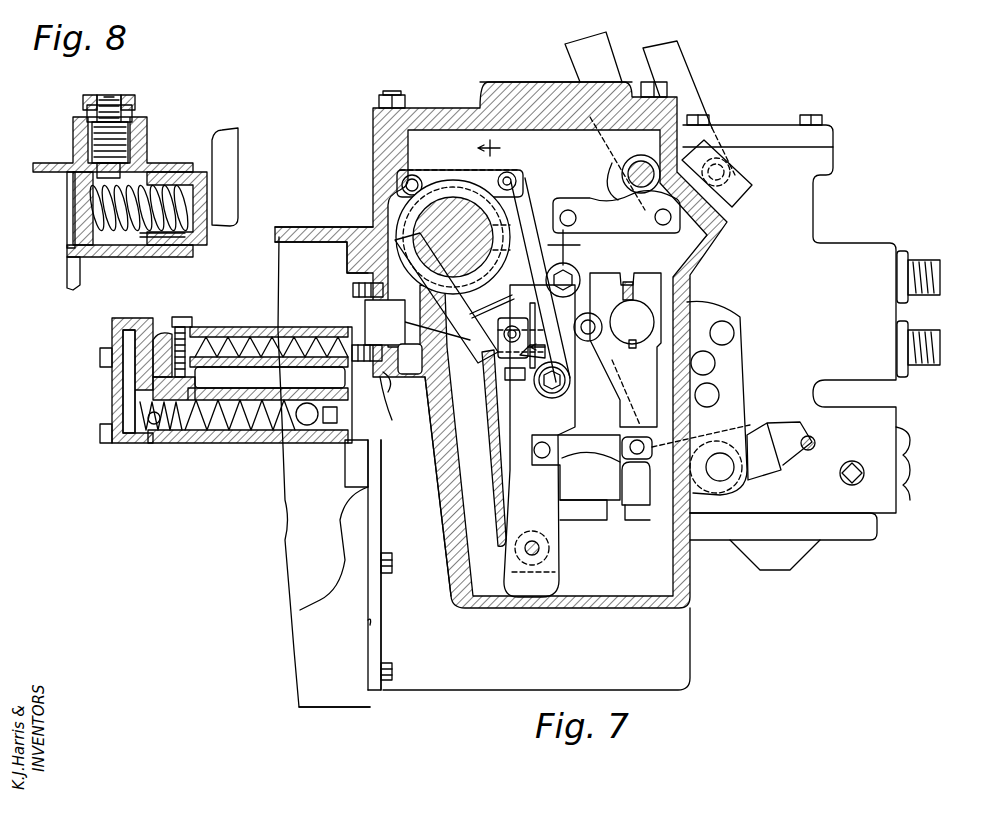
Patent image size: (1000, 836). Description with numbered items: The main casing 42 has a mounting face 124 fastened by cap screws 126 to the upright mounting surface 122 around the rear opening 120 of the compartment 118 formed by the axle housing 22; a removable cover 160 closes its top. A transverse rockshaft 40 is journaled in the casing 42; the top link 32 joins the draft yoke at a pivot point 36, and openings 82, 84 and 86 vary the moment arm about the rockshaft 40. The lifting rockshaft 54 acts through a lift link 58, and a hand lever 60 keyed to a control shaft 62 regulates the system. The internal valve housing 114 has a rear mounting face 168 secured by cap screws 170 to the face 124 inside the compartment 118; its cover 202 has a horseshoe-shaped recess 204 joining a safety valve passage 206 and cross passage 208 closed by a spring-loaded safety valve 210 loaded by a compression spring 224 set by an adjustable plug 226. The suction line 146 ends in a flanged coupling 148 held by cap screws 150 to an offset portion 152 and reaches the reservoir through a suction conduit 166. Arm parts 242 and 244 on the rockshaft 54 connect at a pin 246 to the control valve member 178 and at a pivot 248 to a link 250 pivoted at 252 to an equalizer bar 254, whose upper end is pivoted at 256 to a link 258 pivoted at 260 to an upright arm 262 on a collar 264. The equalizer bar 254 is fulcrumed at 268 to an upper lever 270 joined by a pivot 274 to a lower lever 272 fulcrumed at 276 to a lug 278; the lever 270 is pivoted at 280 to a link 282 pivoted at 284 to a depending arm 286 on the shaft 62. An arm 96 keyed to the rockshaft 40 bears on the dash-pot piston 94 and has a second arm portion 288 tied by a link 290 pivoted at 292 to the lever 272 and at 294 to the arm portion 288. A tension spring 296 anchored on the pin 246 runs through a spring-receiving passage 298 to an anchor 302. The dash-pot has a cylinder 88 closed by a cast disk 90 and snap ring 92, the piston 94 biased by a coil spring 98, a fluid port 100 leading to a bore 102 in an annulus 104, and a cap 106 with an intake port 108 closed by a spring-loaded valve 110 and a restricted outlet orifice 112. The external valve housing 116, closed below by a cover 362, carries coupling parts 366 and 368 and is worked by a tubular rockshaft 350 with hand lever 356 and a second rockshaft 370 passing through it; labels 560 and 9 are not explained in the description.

In FIG. 7, the axle housing 22 is at (340, 707).
In FIG. 7, the top link 32 is at (775, 428).
In FIG. 7, the pivot point 36 is at (720, 481).
In FIG. 7, the rockshaft 40 is at (636, 320).
In FIG. 8, the main casing 42 is at (67, 274).
In FIG. 7, the main casing 42 is at (690, 648).
In FIG. 7, the lifting rockshaft 54 is at (400, 230).
In FIG. 7, the lift link 58 is at (705, 302).
In FIG. 7, the hand lever 60 is at (603, 47).
In FIG. 7, the control shaft 62 is at (638, 158).
In FIG. 7, the opening 82 is at (719, 395).
In FIG. 7, the opening 84 is at (715, 363).
In FIG. 7, the opening 86 is at (734, 333).
In FIG. 8, the cylinder 88 is at (116, 257).
In FIG. 7, the cylinder 88 is at (578, 520).
In FIG. 8, the cast disk 90 is at (75, 210).
In FIG. 8, the snap ring 92 is at (70, 180).
In FIG. 8, the piston 94 is at (207, 238).
In FIG. 7, the piston 94 is at (622, 522).
In FIG. 8, the arm 96 is at (238, 168).
In FIG. 7, the arm 96 is at (638, 505).
In FIG. 8, the coil spring 98 is at (146, 240).
In FIG. 8, the fluid port 100 is at (110, 180).
In FIG. 8, the bore 102 is at (128, 146).
In FIG. 8, the integral annulus 104 is at (147, 124).
In FIG. 7, the integral annulus 104 is at (500, 410).
In FIG. 8, the cap 106 is at (135, 101).
In FIG. 7, the cap 106 is at (507, 380).
In FIG. 8, the intake port 108 is at (110, 96).
In FIG. 8, the spring-loaded valve 110 is at (106, 95).
In FIG. 8, the restricted outlet orifice 112 is at (87, 113).
In FIG. 7, the internal valve housing 114 is at (220, 450).
In FIG. 7, the external valve housing 116 is at (833, 244).
In FIG. 7, the interior compartment 118 is at (290, 580).
In FIG. 7, the rear opening 120 is at (355, 267).
In FIG. 7, the upright mounting surface 122 is at (368, 628).
In FIG. 7, the mounting face 124 is at (368, 650).
In FIG. 7, the cap screws 126 is at (392, 573).
In FIG. 7, the suction line 146 is at (362, 308).
In FIG. 7, the flanged coupling 148 is at (395, 420).
In FIG. 7, the cap screws 150 is at (352, 290).
In FIG. 7, the casing portion 152 is at (388, 392).
In FIG. 7, the removable cover 160 is at (552, 86).
In FIG. 7, the suction conduit 166 is at (463, 503).
In FIG. 7, the rear mounting face 168 is at (381, 456).
In FIG. 7, the cap screws 170 is at (345, 480).
In FIG. 7, the control valve member 178 is at (430, 322).
In FIG. 7, the removable cover 202 is at (112, 398).
In FIG. 7, the horseshoe-shaped recess 204 is at (125, 382).
In FIG. 7, the safety valve passage 206 is at (250, 438).
In FIG. 7, the cross passage 208 is at (328, 425).
In FIG. 7, the safety valve 210 is at (302, 427).
In FIG. 7, the compression spring 224 is at (200, 432).
In FIG. 7, the adjustable plug 226 is at (148, 445).
In FIG. 7, the arm part 242 is at (496, 270).
In FIG. 7, the arm part 244 is at (498, 352).
In FIG. 7, the pin 246 is at (520, 362).
In FIG. 7, the pivot 248 is at (490, 306).
In FIG. 7, the link 250 is at (532, 302).
In FIG. 7, the pivot 252 is at (588, 341).
In FIG. 7, the equalizer bar 254 is at (534, 196).
In FIG. 7, the pivot 256 is at (510, 180).
In FIG. 7, the link 258 is at (462, 178).
In FIG. 7, the pivot 260 is at (415, 182).
In FIG. 7, the upright arm 262 is at (405, 212).
In FIG. 7, the collar 264 is at (398, 220).
In FIG. 7, the fulcrum pivot 268 is at (578, 272).
In FIG. 7, the upper lever 270 is at (578, 246).
In FIG. 7, the lower lever 272 is at (551, 493).
In FIG. 7, the pivot 274 is at (570, 385).
In FIG. 7, the fulcrum 276 is at (540, 550).
In FIG. 7, the lug 278 is at (552, 581).
In FIG. 7, the pivot 280 is at (568, 210).
In FIG. 7, the link 282 is at (610, 212).
In FIG. 7, the pivot 284 is at (671, 220).
In FIG. 7, the depending arm 286 is at (617, 182).
In FIG. 7, the second arm portion 288 is at (643, 418).
In FIG. 7, the link 290 is at (598, 458).
In FIG. 7, the pivot 292 is at (542, 458).
In FIG. 7, the pivot 294 is at (640, 447).
In FIG. 7, the tension spring 296 is at (238, 326).
In FIG. 7, the spring-receiving passage 298 is at (197, 325).
In FIG. 7, the anchor 302 is at (185, 316).
In FIG. 7, the rockshaft 350 is at (722, 168).
In FIG. 7, the hand lever 356 is at (690, 60).
In FIG. 7, the bottom cover 362 is at (877, 527).
In FIG. 7, the coupling part 366 is at (940, 277).
In FIG. 7, the coupling part 368 is at (940, 347).
In FIG. 7, the second valve control rockshaft 370 is at (728, 182).
In FIG. 7, the plate 560 is at (833, 138).
In FIG. 7, the section line 9 is at (518, 248).